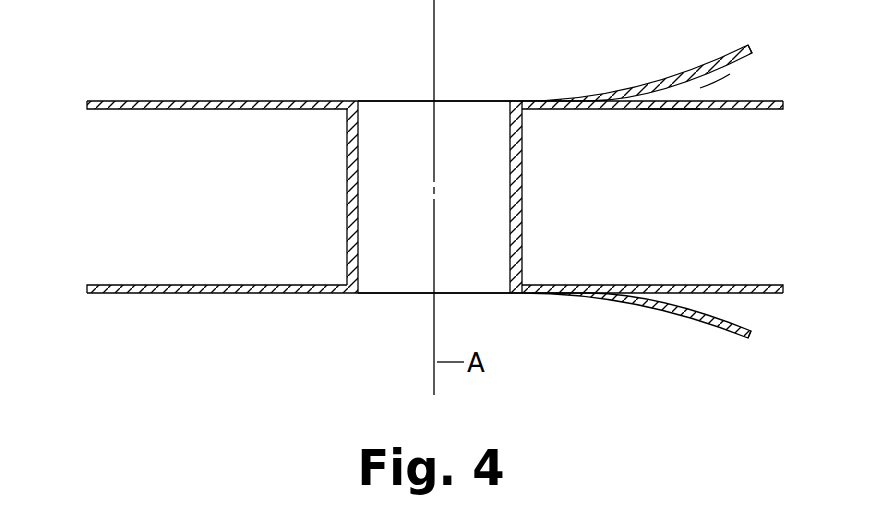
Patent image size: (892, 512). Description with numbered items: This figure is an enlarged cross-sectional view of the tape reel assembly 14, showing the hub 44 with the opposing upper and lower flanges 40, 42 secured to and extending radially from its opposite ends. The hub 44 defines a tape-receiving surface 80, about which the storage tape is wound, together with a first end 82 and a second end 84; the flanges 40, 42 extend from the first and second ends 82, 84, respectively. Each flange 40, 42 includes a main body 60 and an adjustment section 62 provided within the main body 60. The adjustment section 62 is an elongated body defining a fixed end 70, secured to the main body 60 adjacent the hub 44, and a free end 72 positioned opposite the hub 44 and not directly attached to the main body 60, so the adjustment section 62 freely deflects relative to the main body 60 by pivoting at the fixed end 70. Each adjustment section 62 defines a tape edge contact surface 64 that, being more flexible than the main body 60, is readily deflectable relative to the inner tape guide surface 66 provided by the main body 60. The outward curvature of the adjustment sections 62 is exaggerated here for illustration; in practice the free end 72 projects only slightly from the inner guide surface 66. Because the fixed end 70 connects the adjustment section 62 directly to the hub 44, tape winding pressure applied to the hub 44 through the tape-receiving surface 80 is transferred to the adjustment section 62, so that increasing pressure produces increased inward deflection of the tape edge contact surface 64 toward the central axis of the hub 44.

The tape reel assembly 14 is at (388, 33).
The upper flange 40 is at (82, 101).
The lower flange 42 is at (82, 289).
The hub 44 is at (344, 187).
The main body 60 is at (258, 99).
The adjustment section 62 is at (614, 84).
The tape edge contact surface 64 is at (717, 78).
The inner tape guide surface 66 is at (658, 110).
The fixed end 70 is at (515, 101).
The free end 72 is at (751, 50).
The tape-receiving surface 80 is at (524, 192).
The first end 82 is at (397, 101).
The second end 84 is at (398, 295).